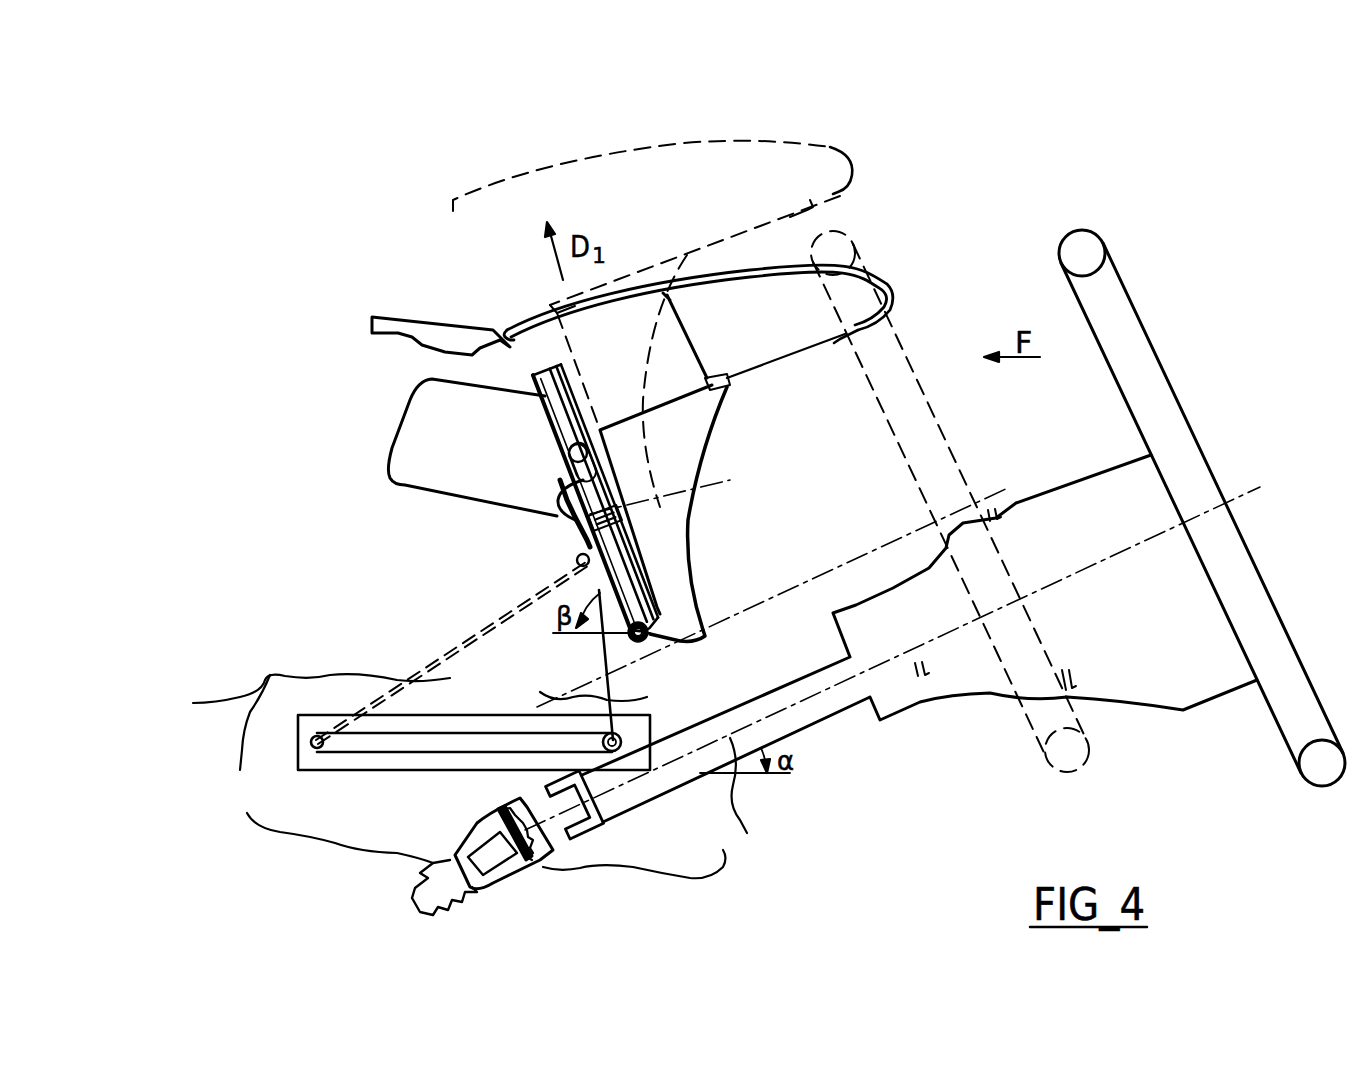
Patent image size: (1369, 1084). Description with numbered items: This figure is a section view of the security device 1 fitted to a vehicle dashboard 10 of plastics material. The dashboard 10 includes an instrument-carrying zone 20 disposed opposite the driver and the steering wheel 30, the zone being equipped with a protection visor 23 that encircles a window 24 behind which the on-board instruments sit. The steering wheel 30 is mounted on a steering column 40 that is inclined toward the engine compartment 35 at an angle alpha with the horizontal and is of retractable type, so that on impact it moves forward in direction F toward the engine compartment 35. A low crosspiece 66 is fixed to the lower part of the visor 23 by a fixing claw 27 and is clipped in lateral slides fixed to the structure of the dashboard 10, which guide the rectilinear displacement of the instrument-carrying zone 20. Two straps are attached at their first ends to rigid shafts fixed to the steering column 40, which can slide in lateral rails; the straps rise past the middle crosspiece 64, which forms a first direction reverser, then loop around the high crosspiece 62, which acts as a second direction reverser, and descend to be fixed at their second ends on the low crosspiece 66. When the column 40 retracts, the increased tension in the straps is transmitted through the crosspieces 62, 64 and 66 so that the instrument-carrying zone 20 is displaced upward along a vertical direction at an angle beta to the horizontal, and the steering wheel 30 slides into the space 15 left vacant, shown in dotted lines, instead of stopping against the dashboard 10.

The security device 1 is at (1021, 228).
The dashboard 10 is at (408, 348).
The space 15 is at (773, 589).
The instrument-carrying zone 20 is at (846, 146).
The protection visor 23 is at (843, 188).
The window 24 is at (650, 357).
The fixing claw 27 is at (607, 483).
The steering wheel 30 is at (1120, 307).
The engine compartment 35 is at (700, 678).
The steering column 40 is at (907, 710).
The high crosspiece 62 is at (567, 467).
The middle crosspiece 64 is at (576, 562).
The low crosspiece 66 is at (657, 455).